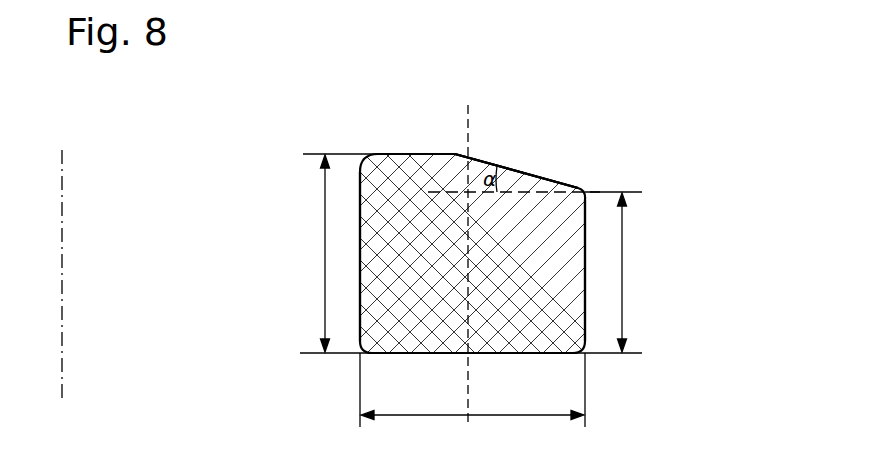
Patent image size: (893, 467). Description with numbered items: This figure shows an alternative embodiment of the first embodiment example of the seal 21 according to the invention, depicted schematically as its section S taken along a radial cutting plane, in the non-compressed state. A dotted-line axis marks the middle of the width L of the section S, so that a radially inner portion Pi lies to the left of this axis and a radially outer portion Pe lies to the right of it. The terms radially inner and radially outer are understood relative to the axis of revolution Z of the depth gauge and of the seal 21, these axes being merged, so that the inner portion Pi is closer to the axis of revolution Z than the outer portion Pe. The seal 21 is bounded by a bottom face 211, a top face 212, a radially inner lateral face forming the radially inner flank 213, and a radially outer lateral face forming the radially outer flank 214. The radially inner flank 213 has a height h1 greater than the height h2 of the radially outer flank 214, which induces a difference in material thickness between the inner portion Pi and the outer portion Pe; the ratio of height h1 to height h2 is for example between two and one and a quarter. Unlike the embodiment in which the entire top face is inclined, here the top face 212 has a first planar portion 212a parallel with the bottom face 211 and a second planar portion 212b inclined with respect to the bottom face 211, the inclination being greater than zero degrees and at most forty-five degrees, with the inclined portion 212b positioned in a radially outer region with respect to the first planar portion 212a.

The seal 21 is at (608, 388).
The bottom face 211 is at (412, 356).
The top face 212 is at (552, 116).
The first planar portion 212a is at (415, 153).
The second planar portion 212b is at (519, 169).
The radially inner flank 213 is at (357, 224).
The radially outer flank 214 is at (587, 247).
The section S is at (384, 135).
The radially inner portion Pi is at (388, 210).
The radially outer portion Pe is at (542, 236).
The axis of revolution Z is at (59, 262).
The height of the radially inner flank h1 is at (469, 253).
The height of the radially outer flank h2 is at (620, 272).
The width of the section L is at (472, 400).